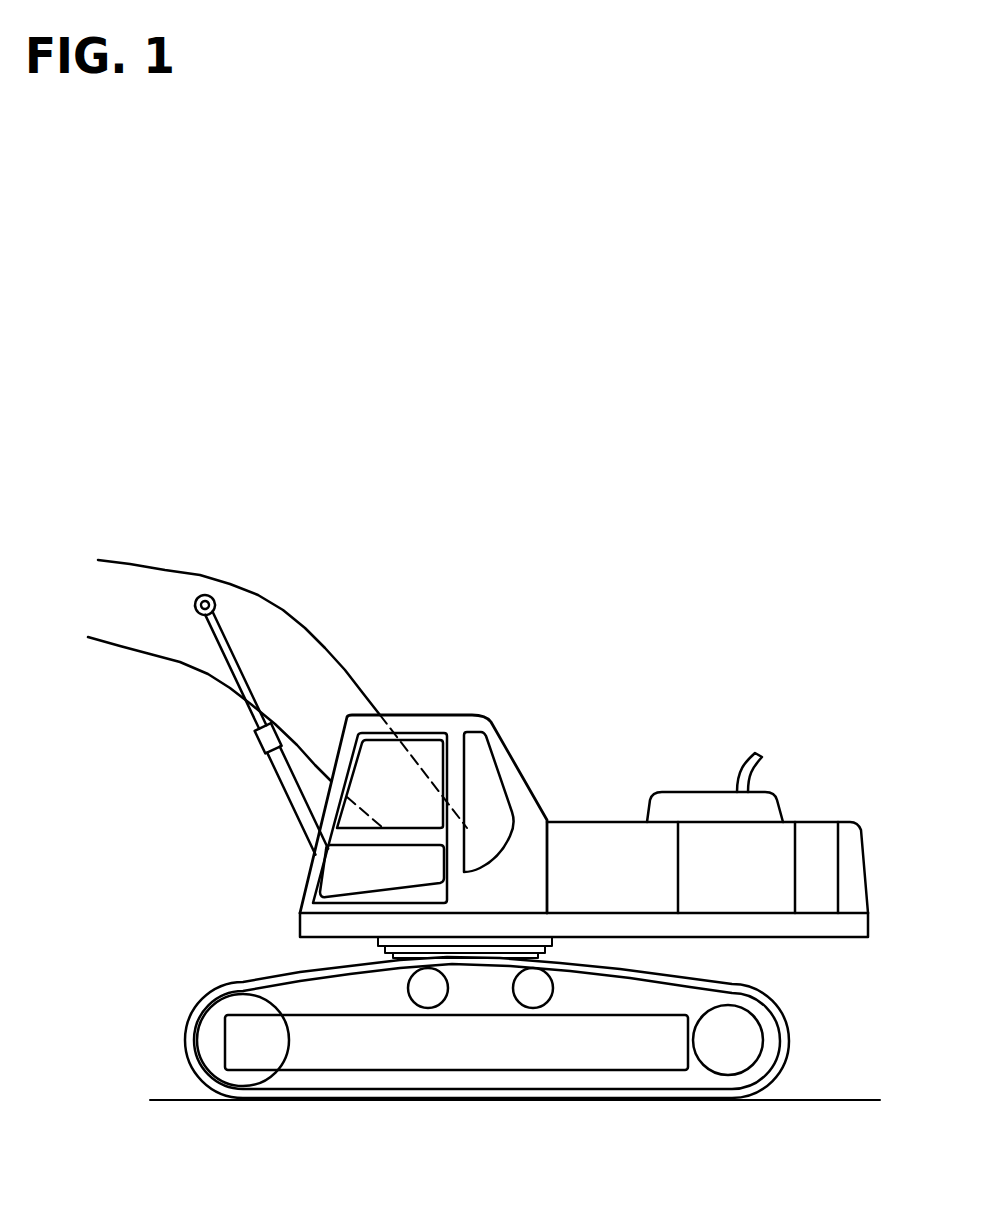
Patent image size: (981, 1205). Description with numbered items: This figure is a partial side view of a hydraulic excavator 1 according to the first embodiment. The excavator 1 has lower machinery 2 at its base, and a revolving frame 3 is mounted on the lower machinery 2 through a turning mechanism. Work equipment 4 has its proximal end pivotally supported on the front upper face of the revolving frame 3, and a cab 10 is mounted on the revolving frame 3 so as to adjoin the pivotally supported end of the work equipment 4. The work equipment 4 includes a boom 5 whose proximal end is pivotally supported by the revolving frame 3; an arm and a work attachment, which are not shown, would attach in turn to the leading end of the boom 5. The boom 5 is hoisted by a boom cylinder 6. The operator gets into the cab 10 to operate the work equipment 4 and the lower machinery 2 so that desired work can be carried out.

The hydraulic excavator 1 is at (512, 621).
The lower machinery 2 is at (638, 1082).
The revolving frame 3 is at (782, 930).
The work equipment 4 is at (270, 563).
The boom 5 is at (297, 650).
The boom cylinder 6 is at (282, 778).
The cab 10 is at (510, 758).